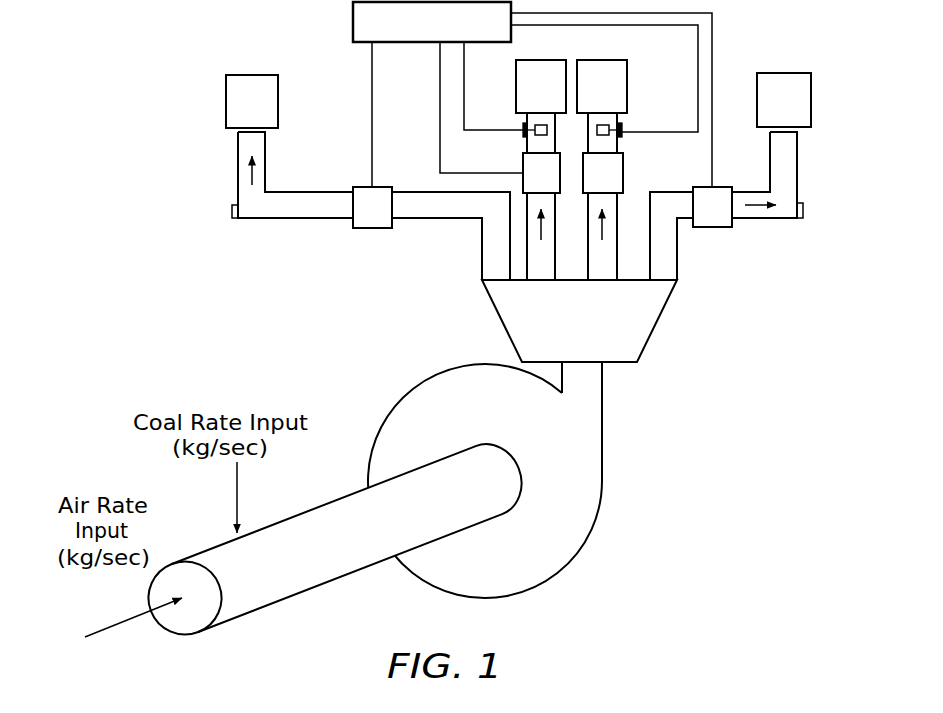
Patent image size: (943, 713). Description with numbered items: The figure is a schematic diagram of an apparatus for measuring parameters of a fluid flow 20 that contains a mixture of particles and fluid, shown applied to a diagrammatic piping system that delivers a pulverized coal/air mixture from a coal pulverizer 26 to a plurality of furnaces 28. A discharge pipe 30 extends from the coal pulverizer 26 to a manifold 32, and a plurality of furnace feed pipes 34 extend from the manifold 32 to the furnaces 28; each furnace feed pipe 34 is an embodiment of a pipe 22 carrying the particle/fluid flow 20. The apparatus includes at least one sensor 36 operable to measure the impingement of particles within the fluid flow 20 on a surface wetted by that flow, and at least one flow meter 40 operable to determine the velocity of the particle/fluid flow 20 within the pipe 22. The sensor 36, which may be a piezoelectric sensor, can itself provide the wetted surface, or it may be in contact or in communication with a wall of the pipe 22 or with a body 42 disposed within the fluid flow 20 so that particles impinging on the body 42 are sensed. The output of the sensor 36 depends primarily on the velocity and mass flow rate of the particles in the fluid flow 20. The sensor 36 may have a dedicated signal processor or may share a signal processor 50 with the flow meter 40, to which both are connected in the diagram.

The fluid flow 20 is at (486, 197).
The pipe 22 is at (574, 173).
The coal pulverizer 26 is at (540, 550).
The furnace 28 is at (239, 114).
The discharge pipe 30 is at (588, 375).
The manifold 32 is at (640, 327).
The furnace feed pipe 34 is at (589, 303).
The sensor 36 is at (489, 204).
The flow meter 40 is at (542, 190).
The body 42 is at (575, 110).
The signal processor 50 is at (353, 22).